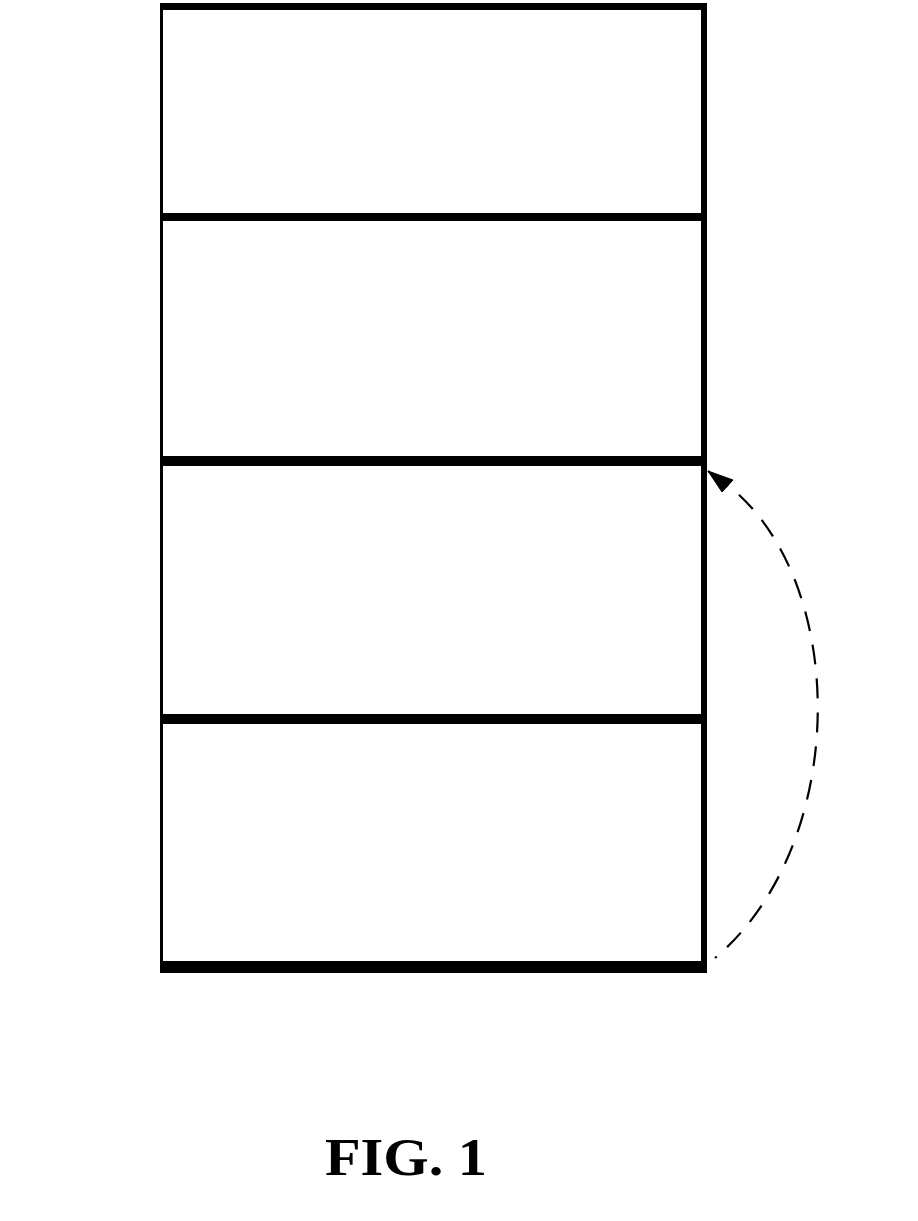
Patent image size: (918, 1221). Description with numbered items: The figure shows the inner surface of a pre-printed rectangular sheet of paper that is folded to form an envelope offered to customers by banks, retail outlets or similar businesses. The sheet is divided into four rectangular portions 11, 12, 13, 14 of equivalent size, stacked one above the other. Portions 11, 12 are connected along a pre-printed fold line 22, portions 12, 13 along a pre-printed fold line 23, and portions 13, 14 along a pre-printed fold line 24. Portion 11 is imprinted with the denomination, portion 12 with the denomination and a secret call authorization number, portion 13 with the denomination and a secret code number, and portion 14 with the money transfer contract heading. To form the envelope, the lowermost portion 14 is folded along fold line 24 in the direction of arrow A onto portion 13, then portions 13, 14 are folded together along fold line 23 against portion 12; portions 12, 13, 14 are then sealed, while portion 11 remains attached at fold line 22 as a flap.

The portion 11 is at (161, 63).
The fold line 22 is at (181, 213).
The portion 12 is at (161, 337).
The fold line 23 is at (173, 457).
The portion 13 is at (161, 577).
The fold line 24 is at (180, 714).
The portion 14 is at (161, 912).
The arrow A is at (730, 952).